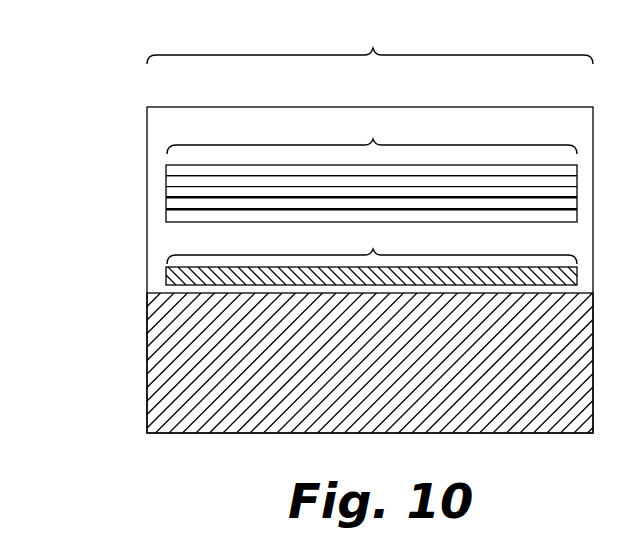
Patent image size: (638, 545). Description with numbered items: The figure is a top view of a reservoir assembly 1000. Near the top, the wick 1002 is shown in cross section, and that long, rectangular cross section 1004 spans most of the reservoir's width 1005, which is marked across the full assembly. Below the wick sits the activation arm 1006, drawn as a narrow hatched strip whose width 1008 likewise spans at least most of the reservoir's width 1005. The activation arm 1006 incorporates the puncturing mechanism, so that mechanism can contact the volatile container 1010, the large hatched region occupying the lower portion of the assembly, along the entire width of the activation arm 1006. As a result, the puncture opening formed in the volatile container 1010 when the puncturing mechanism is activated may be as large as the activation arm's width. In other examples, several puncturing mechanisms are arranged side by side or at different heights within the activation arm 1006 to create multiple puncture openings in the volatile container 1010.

The reservoir assembly 1000 is at (105, 100).
The wick 1002 is at (241, 173).
The rectangular cross section 1004 is at (371, 170).
The reservoir's width 1005 is at (370, 42).
The activation arm 1006 is at (180, 276).
The width 1008 is at (372, 246).
The volatile container 1010 is at (180, 353).